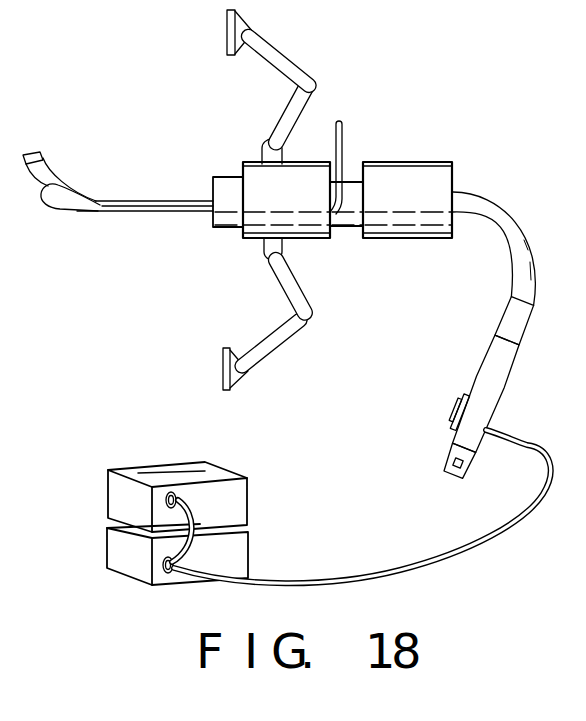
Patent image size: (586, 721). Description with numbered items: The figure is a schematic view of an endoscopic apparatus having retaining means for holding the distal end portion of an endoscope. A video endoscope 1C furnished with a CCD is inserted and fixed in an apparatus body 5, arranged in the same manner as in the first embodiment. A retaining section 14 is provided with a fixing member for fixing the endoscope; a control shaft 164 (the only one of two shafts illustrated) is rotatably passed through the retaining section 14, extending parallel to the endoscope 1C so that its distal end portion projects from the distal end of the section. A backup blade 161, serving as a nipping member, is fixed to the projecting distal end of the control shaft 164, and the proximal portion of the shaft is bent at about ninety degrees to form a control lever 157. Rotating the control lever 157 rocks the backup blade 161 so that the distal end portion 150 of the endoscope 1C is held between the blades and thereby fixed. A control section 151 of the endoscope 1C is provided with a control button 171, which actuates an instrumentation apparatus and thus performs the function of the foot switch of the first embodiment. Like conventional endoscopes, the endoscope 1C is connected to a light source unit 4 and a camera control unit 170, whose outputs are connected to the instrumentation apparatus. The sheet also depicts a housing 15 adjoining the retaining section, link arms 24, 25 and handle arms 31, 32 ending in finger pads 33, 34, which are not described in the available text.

The video endoscope 1C is at (507, 210).
The light source unit 4 is at (247, 552).
The apparatus body 5 is at (390, 150).
The retaining section 14 is at (317, 238).
The connector housing 15 is at (432, 168).
The upper link arm 24 is at (303, 110).
The lower link arm 25 is at (303, 285).
The upper handle arm 31 is at (282, 57).
The lower handle arm 32 is at (283, 335).
The upper finger pad 33 is at (229, 30).
The lower finger pad 34 is at (223, 367).
The distal end portion 150 is at (50, 168).
The control section 151 is at (490, 357).
The control lever 157 is at (344, 133).
The backup blade 161 is at (65, 218).
The control shaft 164 is at (165, 213).
The camera control unit 170 is at (246, 498).
The control button 171 is at (458, 457).